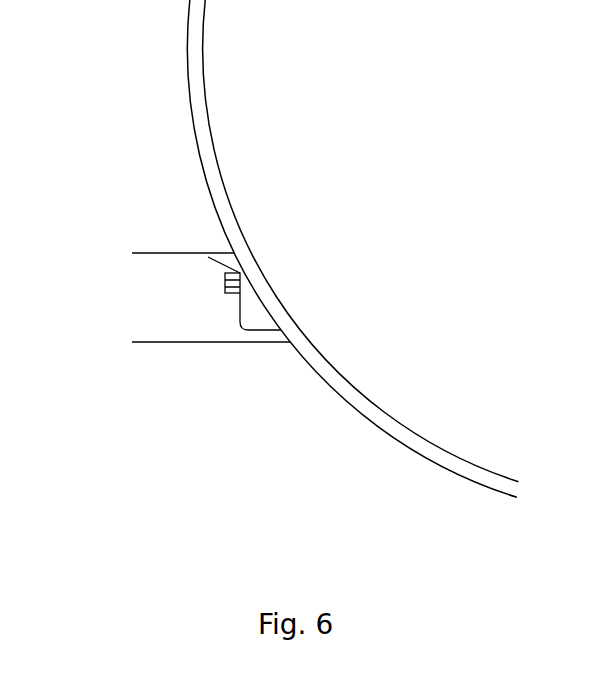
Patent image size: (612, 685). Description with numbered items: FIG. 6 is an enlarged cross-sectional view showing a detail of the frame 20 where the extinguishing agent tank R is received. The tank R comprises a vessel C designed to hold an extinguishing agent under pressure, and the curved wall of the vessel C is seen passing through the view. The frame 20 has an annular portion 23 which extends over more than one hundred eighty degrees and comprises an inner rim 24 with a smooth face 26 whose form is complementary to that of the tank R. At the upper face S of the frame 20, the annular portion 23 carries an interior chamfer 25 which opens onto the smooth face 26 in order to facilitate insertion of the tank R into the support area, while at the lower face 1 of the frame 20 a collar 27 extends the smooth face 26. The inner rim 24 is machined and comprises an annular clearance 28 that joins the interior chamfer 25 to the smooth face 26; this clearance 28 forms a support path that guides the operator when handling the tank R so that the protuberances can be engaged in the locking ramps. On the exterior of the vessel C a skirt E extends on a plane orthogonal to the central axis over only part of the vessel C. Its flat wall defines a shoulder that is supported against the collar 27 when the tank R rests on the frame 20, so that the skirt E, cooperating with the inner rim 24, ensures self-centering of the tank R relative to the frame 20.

The housing wall 1 is at (141, 342).
The frame 20 is at (126, 331).
The annular portion 23 is at (160, 282).
The inner rim 24 is at (224, 314).
The interior chamfer 25 is at (233, 273).
The smooth face 26 is at (238, 325).
The collar 27 is at (250, 337).
The annular clearance 28 is at (227, 287).
The upper face S is at (173, 253).
The skirt E is at (255, 312).
The extinguishing agent tank R is at (423, 287).
The vessel C is at (333, 388).